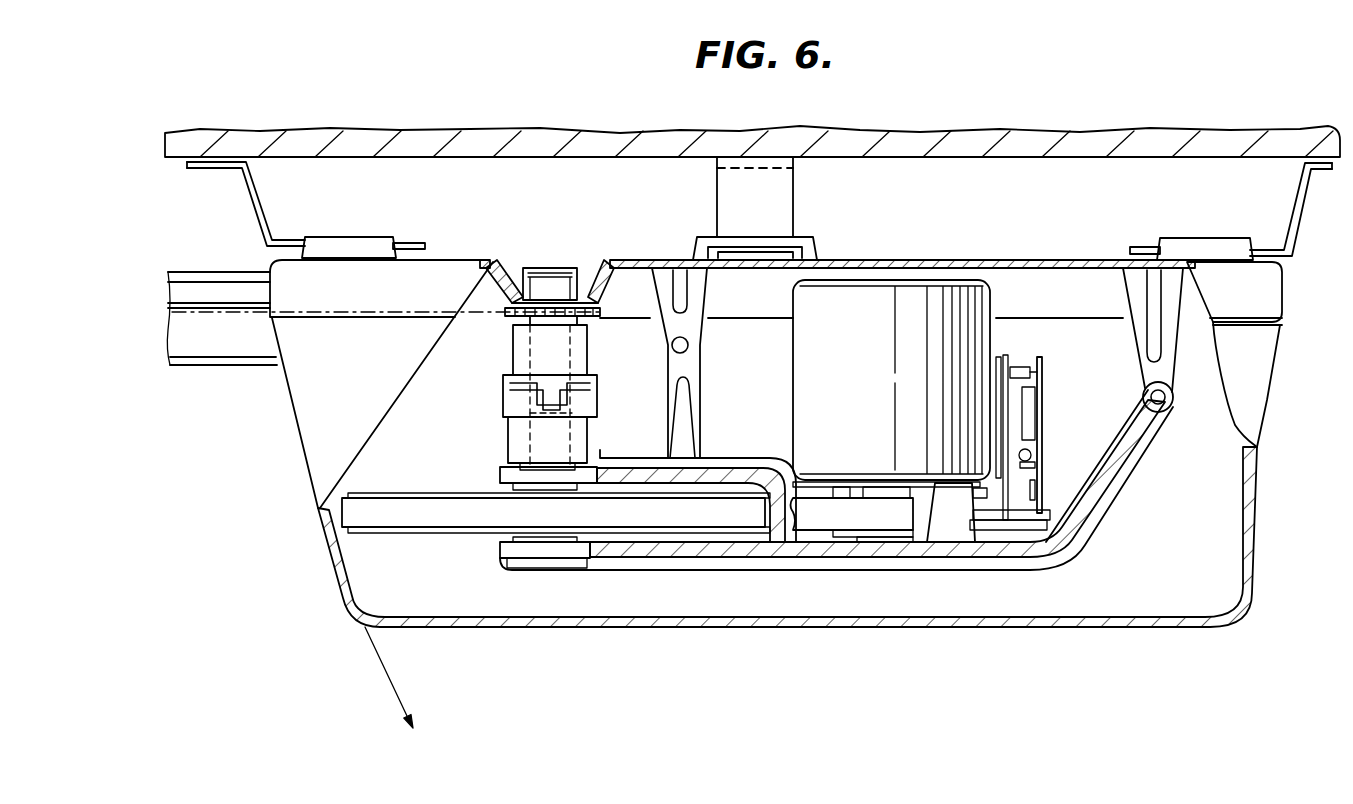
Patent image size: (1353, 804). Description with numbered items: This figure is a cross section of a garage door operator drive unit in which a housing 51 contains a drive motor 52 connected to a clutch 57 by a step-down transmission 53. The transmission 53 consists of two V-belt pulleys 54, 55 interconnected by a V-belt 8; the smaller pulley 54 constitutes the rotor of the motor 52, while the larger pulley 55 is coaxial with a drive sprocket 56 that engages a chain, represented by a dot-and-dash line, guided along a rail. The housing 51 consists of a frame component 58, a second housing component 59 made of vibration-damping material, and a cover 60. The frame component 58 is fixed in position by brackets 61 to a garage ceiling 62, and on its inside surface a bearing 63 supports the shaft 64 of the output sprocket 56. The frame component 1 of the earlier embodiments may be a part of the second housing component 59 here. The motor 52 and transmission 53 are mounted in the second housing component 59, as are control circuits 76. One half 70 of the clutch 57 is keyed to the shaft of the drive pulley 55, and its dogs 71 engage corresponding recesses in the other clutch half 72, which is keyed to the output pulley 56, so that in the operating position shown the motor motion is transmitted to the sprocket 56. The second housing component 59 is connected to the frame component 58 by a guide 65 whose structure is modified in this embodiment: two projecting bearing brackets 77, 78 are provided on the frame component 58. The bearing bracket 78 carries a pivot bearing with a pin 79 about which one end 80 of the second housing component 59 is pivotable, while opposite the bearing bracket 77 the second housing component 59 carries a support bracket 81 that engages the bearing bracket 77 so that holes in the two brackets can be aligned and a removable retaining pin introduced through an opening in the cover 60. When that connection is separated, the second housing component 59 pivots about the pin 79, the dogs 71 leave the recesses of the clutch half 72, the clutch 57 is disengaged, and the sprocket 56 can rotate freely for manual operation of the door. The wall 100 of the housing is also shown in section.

The frame component 1 is at (1282, 290).
The V-belt 8 is at (415, 507).
The housing 51 is at (802, 497).
The drive motor 52 is at (915, 380).
The step-down transmission 53 is at (836, 509).
The smaller pulley 54 is at (912, 540).
The larger pulley 55 is at (450, 530).
The drive sprocket 56 is at (512, 303).
The clutch 57 is at (506, 393).
The frame component 58 is at (1035, 262).
The second housing component 59 is at (1032, 552).
The cover 60 is at (1148, 633).
The brackets 61 is at (270, 210).
The garage ceiling 62 is at (483, 140).
The bearing 63 is at (589, 268).
The shaft 64 is at (545, 275).
The guide 65 is at (935, 405).
The clutch half 70 is at (517, 437).
The dogs 71 is at (518, 398).
The clutch half 72 is at (518, 352).
The control circuits 76 is at (1038, 450).
The bearing bracket 77 is at (693, 312).
The bearing bracket 78 is at (1172, 342).
The pin 79 is at (1168, 403).
The end of second housing component 80 is at (1127, 448).
The support bracket 81 is at (693, 420).
The housing wall 100 is at (1277, 370).